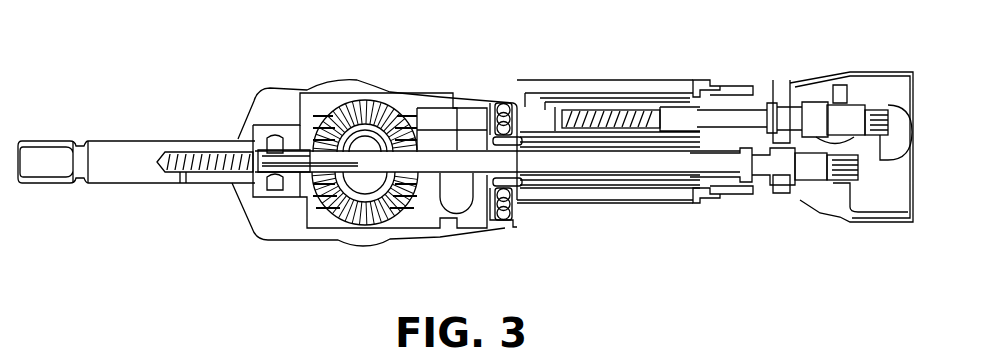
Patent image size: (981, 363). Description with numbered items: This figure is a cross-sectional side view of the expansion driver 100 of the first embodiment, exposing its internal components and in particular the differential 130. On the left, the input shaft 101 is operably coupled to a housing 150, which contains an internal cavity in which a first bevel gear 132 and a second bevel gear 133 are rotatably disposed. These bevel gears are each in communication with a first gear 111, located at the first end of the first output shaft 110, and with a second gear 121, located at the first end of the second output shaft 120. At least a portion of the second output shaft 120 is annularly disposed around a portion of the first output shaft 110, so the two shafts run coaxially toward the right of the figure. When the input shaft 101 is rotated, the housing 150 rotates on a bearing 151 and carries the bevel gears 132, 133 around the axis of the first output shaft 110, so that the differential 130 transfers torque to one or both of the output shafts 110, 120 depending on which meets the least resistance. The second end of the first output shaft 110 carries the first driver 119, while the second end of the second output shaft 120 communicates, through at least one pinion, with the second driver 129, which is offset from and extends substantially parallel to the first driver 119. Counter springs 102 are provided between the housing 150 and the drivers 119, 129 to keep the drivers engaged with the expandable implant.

The expansion driver 100 is at (82, 69).
The input shaft 101 is at (135, 147).
The counter springs 102 is at (198, 154).
The first output shaft 110 is at (457, 176).
The first gear 111 is at (317, 197).
The first driver 119 is at (803, 172).
The second output shaft 120 is at (457, 148).
The second gear 121 is at (413, 130).
The second driver 129 is at (840, 118).
The differential 130 is at (322, 79).
The first bevel gear 132 is at (353, 213).
The second bevel gear 133 is at (362, 112).
The housing 150 is at (265, 97).
The bearing 151 is at (507, 206).